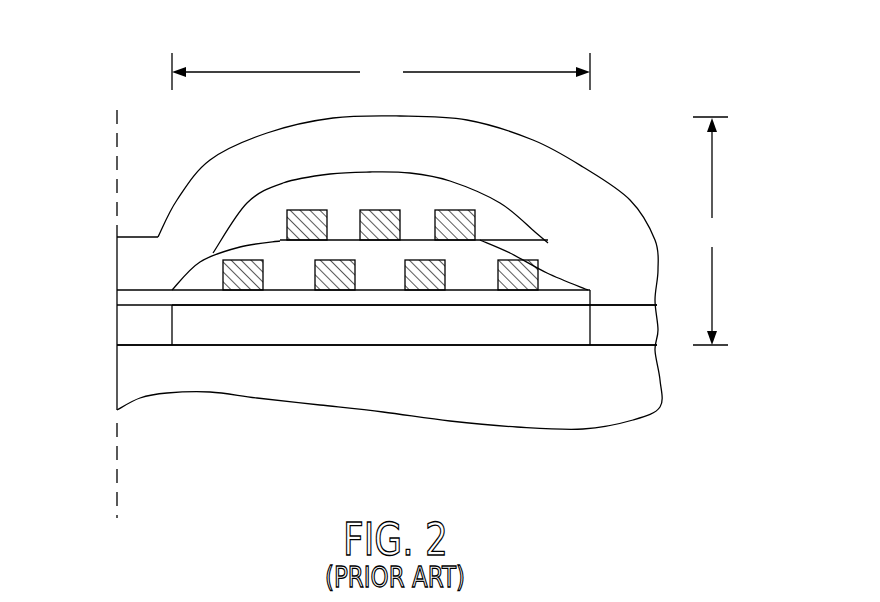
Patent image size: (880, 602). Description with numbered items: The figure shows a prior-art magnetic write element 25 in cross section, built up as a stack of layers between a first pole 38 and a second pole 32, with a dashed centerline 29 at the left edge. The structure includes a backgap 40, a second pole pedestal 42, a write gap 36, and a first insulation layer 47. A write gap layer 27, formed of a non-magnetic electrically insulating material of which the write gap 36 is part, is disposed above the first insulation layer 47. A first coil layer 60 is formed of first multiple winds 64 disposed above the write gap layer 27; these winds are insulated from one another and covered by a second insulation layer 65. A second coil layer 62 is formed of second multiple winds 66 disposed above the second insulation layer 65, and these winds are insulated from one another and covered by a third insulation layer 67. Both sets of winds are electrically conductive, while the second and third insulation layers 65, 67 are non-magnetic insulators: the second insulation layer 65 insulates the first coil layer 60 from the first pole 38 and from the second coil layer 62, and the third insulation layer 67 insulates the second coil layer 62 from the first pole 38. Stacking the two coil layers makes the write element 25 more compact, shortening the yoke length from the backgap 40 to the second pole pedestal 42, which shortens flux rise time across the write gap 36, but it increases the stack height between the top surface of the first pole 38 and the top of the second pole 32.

The magnetic write element 25 is at (634, 57).
The centerline 29 is at (115, 143).
The first pole 38 is at (372, 143).
The third insulation layer 67 is at (340, 192).
The second multiple winds 66 is at (453, 210).
The second insulation layer 65 is at (282, 257).
The second coil layer 62 is at (490, 217).
The first coil layer 60 is at (555, 270).
The first multiple winds 64 is at (518, 288).
The write gap 36 is at (132, 298).
The second pole pedestal 42 is at (132, 325).
The first insulation layer 47 is at (305, 333).
The write gap layer 27 is at (370, 297).
The backgap 40 is at (635, 335).
The second pole 32 is at (398, 398).